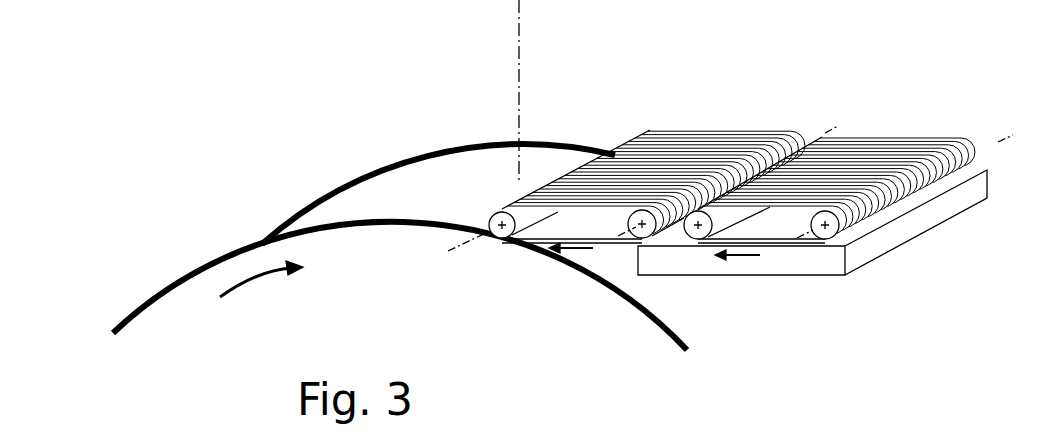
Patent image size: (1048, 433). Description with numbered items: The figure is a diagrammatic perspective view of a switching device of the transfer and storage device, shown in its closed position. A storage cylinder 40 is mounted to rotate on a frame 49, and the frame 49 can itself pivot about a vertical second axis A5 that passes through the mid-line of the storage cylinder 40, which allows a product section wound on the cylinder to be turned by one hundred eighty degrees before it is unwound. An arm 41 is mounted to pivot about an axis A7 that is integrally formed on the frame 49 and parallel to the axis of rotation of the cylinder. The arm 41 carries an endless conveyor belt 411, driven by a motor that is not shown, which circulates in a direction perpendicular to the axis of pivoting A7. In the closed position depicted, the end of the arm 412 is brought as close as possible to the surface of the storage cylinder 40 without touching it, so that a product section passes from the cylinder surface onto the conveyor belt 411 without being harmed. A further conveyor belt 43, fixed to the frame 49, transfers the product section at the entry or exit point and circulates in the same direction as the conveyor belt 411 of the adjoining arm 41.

The storage cylinder 40 is at (302, 214).
The second axis A5 is at (523, 117).
The arm 41 is at (627, 206).
The endless conveyor belt 411 is at (622, 205).
The end of the arm 412 is at (500, 238).
The axis of pivoting A7 is at (642, 224).
The conveyor belt 43 is at (913, 148).
The frame 49 is at (942, 205).